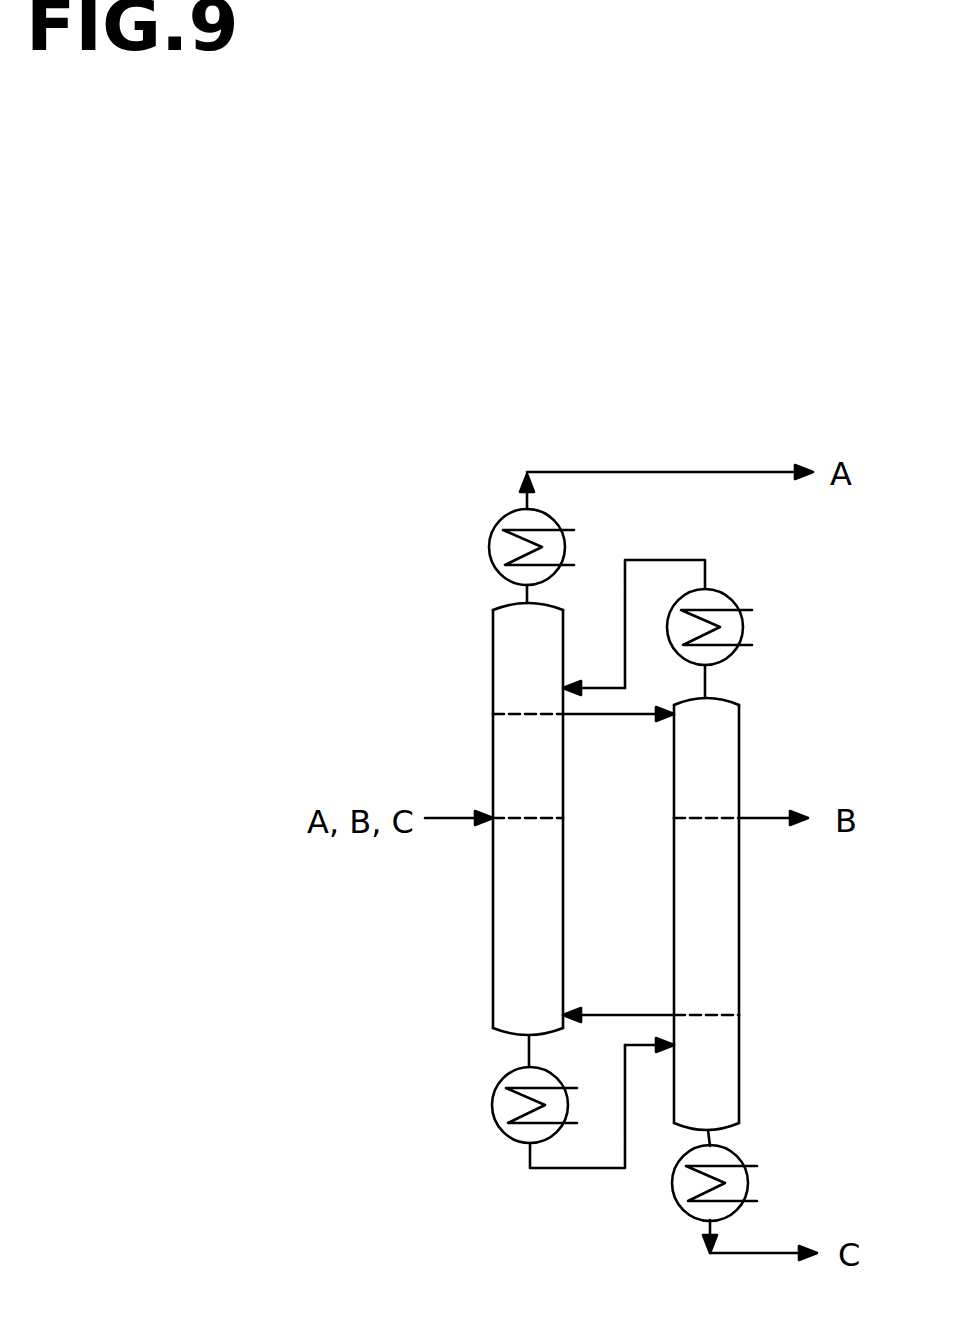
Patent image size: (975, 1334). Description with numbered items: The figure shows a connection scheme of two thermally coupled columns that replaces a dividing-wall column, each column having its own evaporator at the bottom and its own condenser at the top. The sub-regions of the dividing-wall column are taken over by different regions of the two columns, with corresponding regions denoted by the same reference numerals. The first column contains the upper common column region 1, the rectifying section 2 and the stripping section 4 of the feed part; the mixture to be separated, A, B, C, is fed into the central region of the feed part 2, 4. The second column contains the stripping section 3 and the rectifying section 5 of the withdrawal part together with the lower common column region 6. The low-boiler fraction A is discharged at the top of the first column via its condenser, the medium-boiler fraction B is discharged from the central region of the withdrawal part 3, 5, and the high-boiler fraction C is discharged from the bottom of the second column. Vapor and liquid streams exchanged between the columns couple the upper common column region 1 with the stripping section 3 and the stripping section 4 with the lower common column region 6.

The upper common column region 1 is at (528, 658).
The rectifying section of the feed part 2 is at (528, 766).
The stripping section of the withdrawal part 3 is at (706, 758).
The stripping section of the feed part 4 is at (528, 926).
The rectifying section of the withdrawal part 5 is at (706, 916).
The lower common column region 6 is at (706, 1072).